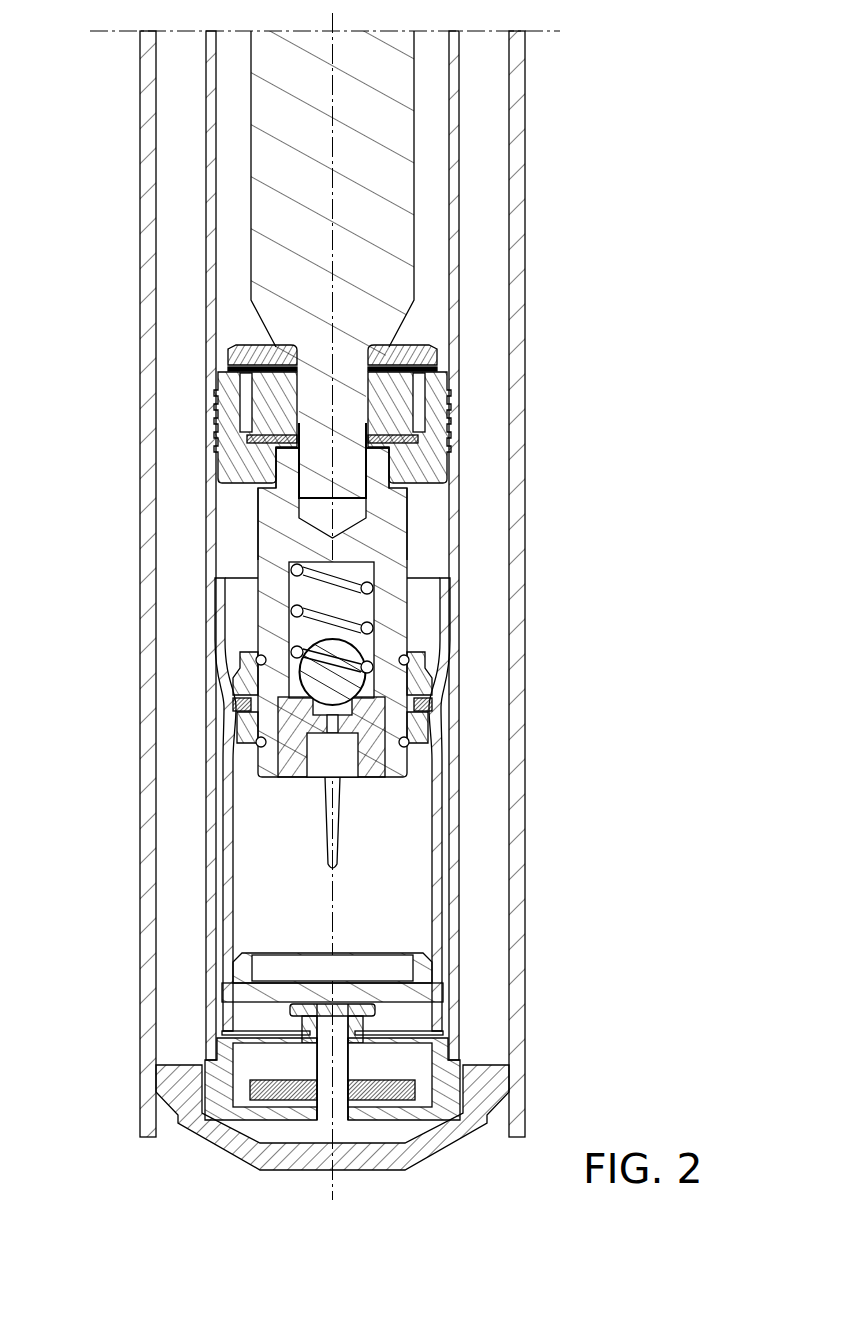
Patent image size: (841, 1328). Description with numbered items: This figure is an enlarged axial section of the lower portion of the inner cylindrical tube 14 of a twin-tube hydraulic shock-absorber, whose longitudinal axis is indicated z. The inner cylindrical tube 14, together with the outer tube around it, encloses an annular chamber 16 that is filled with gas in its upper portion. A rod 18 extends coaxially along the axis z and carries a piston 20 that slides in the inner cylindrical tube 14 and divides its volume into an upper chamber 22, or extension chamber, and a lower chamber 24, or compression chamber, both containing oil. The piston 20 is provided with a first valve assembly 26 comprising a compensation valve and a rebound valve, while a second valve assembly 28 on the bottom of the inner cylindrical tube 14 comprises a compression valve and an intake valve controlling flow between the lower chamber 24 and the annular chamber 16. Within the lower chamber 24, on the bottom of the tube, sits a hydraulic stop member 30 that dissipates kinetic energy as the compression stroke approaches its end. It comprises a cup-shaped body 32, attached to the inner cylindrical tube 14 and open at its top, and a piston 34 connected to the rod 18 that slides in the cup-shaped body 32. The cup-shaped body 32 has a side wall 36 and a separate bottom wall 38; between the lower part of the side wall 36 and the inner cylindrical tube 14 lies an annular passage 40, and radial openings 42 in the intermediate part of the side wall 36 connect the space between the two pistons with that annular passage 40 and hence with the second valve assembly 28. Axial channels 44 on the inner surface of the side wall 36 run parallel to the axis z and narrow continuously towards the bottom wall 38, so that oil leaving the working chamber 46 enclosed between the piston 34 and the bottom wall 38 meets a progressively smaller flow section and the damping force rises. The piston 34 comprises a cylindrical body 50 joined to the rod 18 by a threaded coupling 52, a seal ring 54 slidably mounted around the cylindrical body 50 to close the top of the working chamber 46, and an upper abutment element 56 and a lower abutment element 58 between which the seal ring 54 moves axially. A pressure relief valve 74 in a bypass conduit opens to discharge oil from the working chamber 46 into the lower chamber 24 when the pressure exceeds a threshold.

The longitudinal axis z is at (332, 103).
The inner cylindrical tube 14 is at (206, 212).
The annular chamber 16 is at (478, 306).
The rod 18 is at (415, 182).
The piston 20 is at (443, 380).
The upper chamber 22 is at (432, 233).
The lower chamber 24 is at (433, 535).
The first valve assembly 26 is at (404, 450).
The second valve assembly 28 is at (270, 1088).
The hydraulic stop member 30 is at (204, 917).
The cup-shaped body 32 is at (455, 886).
The piston 34 is at (407, 595).
The side wall 36 is at (222, 1033).
The bottom wall 38 is at (380, 978).
The annular passage 40 is at (220, 846).
The radial openings 42 is at (240, 700).
The axial channels 44 is at (338, 832).
The working chamber 46 is at (392, 907).
The cylindrical body 50 is at (258, 537).
The threaded coupling 52 is at (300, 487).
The seal ring 54 is at (430, 716).
The upper abutment element 56 is at (428, 663).
The lower abutment element 58 is at (236, 735).
The pressure relief valve 74 is at (292, 690).